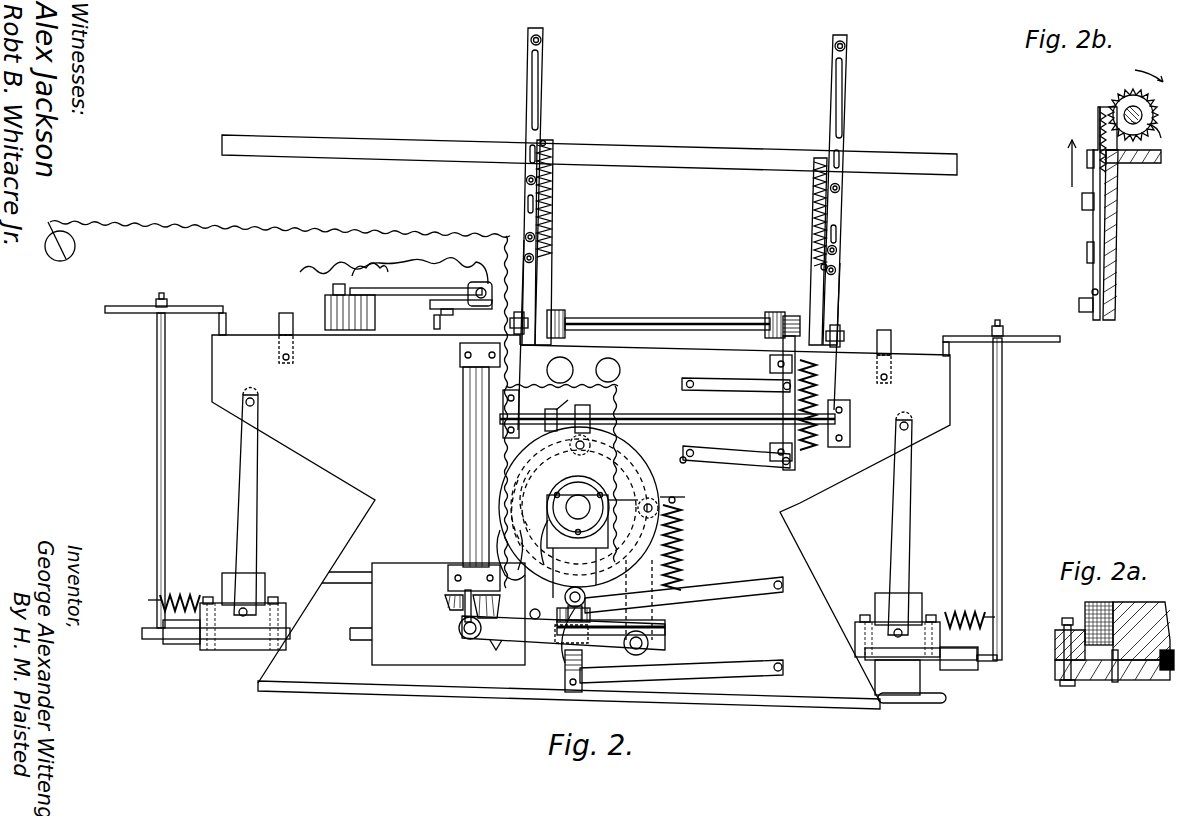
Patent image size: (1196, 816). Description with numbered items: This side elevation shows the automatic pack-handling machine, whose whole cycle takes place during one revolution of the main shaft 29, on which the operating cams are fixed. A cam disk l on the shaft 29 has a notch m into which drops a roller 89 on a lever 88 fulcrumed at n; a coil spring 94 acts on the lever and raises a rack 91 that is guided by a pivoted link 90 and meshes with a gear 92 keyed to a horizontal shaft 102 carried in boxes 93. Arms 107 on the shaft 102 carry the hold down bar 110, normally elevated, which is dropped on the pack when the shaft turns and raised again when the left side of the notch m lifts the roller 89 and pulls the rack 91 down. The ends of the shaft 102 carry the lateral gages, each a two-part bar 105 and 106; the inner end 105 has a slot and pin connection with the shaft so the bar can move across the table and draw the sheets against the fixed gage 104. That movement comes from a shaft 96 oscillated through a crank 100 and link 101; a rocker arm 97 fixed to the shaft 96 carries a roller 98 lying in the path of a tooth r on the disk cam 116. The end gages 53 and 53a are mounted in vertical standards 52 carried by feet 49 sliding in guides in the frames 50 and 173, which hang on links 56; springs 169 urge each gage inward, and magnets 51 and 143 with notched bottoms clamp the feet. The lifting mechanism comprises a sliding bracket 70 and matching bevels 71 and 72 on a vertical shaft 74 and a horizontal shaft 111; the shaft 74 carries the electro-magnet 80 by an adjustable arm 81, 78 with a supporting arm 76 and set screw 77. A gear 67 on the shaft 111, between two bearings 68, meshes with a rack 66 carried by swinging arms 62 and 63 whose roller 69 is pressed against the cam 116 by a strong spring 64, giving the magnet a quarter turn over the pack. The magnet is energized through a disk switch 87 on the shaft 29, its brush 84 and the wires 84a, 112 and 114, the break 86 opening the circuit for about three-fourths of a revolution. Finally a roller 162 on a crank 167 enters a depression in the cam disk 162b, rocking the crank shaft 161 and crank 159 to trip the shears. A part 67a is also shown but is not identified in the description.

In FIG. 2, the main shaft 29 is at (578, 537).
In FIG. 2, the foot 49 is at (183, 636).
In FIG. 2A, the foot 49 is at (1133, 676).
In FIG. 2, the frame 50 is at (897, 636).
In FIG. 2, the magnet 51 is at (876, 600).
In FIG. 2A, the magnet 51 is at (1085, 610).
In FIG. 2, the vertical standard 52 is at (157, 458).
In FIG. 2, the end gage 53 is at (939, 338).
In FIG. 2, the end gage 53a is at (226, 318).
In FIG. 2, the link 56 is at (258, 507).
In FIG. 2, the swinging arm 62 is at (746, 662).
In FIG. 2, the swinging arm 63 is at (748, 580).
In FIG. 2, the spring 64 is at (682, 540).
In FIG. 2, the rack 66 is at (582, 660).
In FIG. 2, the gear 67 is at (556, 639).
In FIG. 2, the lever arm 67a is at (511, 543).
In FIG. 2, the bearing 68 is at (574, 622).
In FIG. 2, the roller 69 is at (586, 594).
In FIG. 2, the sliding bracket 70 is at (428, 666).
In FIG. 2, the bevel 71 is at (445, 602).
In FIG. 2, the bevel 72 is at (478, 643).
In FIG. 2, the vertical shaft 74 is at (463, 431).
In FIG. 2, the supporting arm 76 is at (461, 313).
In FIG. 2, the set screw 77 is at (436, 327).
In FIG. 2, the adjustable arm 78 is at (459, 293).
In FIG. 2, the electro-magnet 80 is at (375, 318).
In FIG. 2, the adjustable arm 81 is at (345, 290).
In FIG. 2, the brush 84 is at (680, 520).
In FIG. 2, the wire 84a is at (232, 232).
In FIG. 2, the break 86 is at (618, 483).
In FIG. 2, the disk switch 87 is at (660, 500).
In FIG. 2, the lever 88 is at (712, 460).
In FIG. 2B, the lever 88 is at (1085, 314).
In FIG. 2, the roller 89 is at (570, 445).
In FIG. 2, the pivoted link 90 is at (736, 381).
In FIG. 2B, the pivoted link 90 is at (1082, 210).
In FIG. 2, the rack 91 is at (782, 400).
In FIG. 2B, the rack 91 is at (1097, 128).
In FIG. 2, the gear 92 is at (791, 310).
In FIG. 2B, the gear 92 is at (1113, 104).
In FIG. 2, the box 93 is at (562, 312).
In FIG. 2, the coil spring 94 is at (816, 452).
In FIG. 2, the shaft 96 is at (706, 414).
In FIG. 2, the rocker arm 97 is at (582, 405).
In FIG. 2, the roller 98 is at (600, 426).
In FIG. 2, the crank 100 is at (520, 355).
In FIG. 2, the link 101 is at (526, 315).
In FIG. 2, the horizontal shaft 102 is at (710, 320).
In FIG. 2B, the horizontal shaft 102 is at (1143, 122).
In FIG. 2, the fixed gage 104 is at (583, 337).
In FIG. 2, the gage bar inner end 105 is at (522, 250).
In FIG. 2, the gage bar 106 is at (530, 100).
In FIG. 2, the arm 107 is at (812, 268).
In FIG. 2, the hold down bar 110 is at (589, 155).
In FIG. 2, the horizontal shaft 111 is at (666, 629).
In FIG. 2, the wire 112 is at (464, 278).
In FIG. 2, the wire 114 is at (354, 270).
In FIG. 2, the disk cam 116 is at (528, 546).
In FIG. 2, the magnet 143 is at (265, 579).
In FIG. 2, the crank 159 is at (490, 654).
In FIG. 2, the crank shaft 161 is at (649, 647).
In FIG. 2, the roller 162 is at (660, 510).
In FIG. 2, the cam disk 162b is at (525, 478).
In FIG. 2, the crank 167 is at (648, 608).
In FIG. 2, the spring 169 is at (196, 594).
In FIG. 2, the frame 173 is at (243, 623).
In FIG. 2, the cam disk l is at (630, 486).
In FIG. 2, the notch m is at (573, 480).
In FIG. 2, the fulcrum n is at (686, 457).
In FIG. 2, the tooth r is at (562, 396).